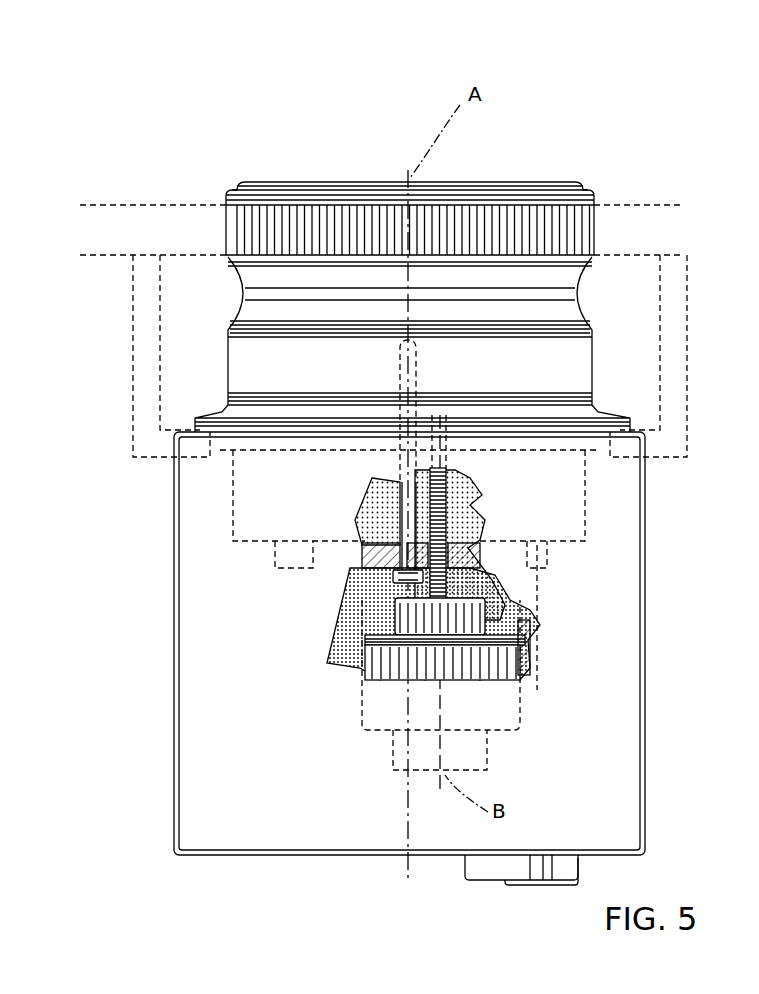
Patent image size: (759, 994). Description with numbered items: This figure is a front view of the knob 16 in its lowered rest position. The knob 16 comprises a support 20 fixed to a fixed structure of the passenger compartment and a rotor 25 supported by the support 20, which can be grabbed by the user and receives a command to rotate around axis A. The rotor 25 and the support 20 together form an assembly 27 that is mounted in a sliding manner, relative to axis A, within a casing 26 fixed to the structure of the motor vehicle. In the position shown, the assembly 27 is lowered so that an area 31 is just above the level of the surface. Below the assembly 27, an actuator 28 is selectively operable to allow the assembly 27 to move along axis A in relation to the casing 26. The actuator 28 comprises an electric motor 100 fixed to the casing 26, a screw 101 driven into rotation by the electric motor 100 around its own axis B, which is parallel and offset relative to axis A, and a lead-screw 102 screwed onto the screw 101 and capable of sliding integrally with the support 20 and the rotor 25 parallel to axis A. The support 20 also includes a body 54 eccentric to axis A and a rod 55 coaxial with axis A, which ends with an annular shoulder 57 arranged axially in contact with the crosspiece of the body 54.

The knob 16 is at (445, 239).
The support 20 is at (512, 185).
The rotor 25 is at (296, 243).
The assembly 27 is at (633, 332).
The area 31 is at (348, 185).
The casing 26 is at (660, 594).
The actuator 28 is at (486, 574).
The body 54 is at (363, 580).
The rod 55 is at (400, 513).
The annular shoulder 57 is at (375, 606).
The electric motor 100 is at (482, 660).
The screw 101 is at (470, 508).
The lead-screw 102 is at (455, 548).